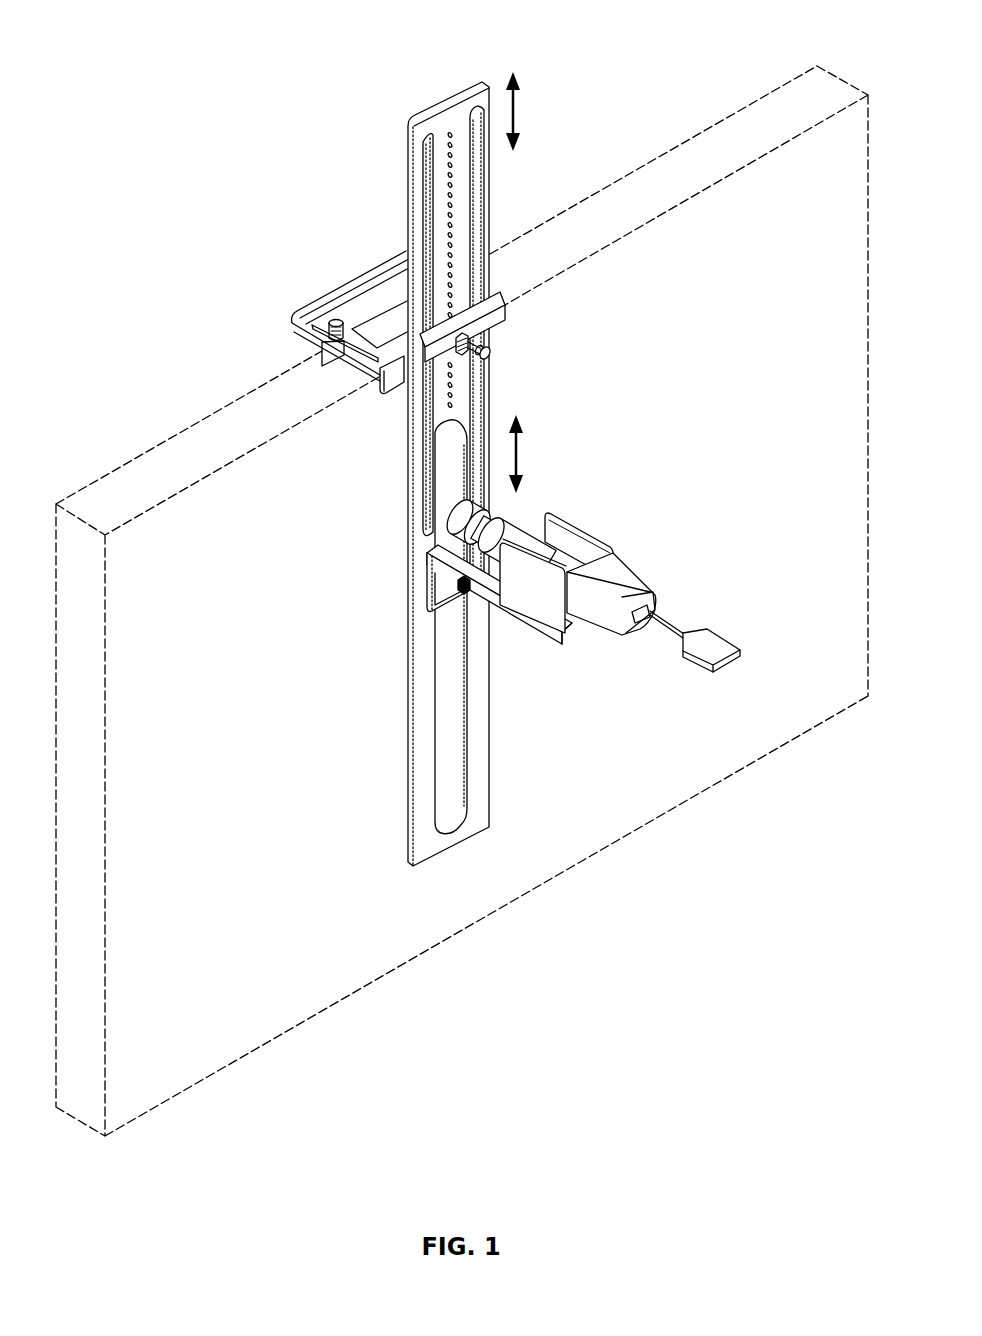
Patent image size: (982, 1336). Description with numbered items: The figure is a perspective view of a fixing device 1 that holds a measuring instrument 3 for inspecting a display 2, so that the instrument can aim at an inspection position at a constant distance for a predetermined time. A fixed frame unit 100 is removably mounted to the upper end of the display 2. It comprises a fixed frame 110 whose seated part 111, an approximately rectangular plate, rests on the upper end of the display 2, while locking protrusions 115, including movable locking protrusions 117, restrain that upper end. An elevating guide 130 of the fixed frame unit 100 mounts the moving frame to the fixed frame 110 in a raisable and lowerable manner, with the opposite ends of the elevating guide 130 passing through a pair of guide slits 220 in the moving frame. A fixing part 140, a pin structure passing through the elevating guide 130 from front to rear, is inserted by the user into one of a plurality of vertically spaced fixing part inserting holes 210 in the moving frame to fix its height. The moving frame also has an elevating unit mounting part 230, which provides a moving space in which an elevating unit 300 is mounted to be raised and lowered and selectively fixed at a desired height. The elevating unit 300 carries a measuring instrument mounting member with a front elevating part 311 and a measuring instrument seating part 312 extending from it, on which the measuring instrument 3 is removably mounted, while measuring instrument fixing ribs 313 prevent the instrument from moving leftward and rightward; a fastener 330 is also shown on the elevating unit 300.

The fixing device 1 is at (481, 439).
The display 2 is at (740, 101).
The measuring instrument 3 is at (591, 572).
The fixed frame unit 100 is at (396, 458).
The fixed frame 110 is at (334, 337).
The seated part 111 is at (312, 327).
The locking protrusions 115 is at (392, 393).
The movable locking protrusions 117 is at (323, 368).
The elevating guide 130 is at (443, 327).
The fixing part 140 is at (460, 351).
The fixing part inserting holes 210 is at (454, 458).
The guide slits 220 is at (439, 134).
The elevating unit mounting part 230 is at (452, 696).
The elevating unit 300 is at (539, 568).
The front elevating part 311 is at (434, 603).
The measuring instrument seating part 312 is at (437, 548).
The measuring instrument fixing ribs 313 is at (566, 518).
The fixing bolt 330 is at (461, 584).